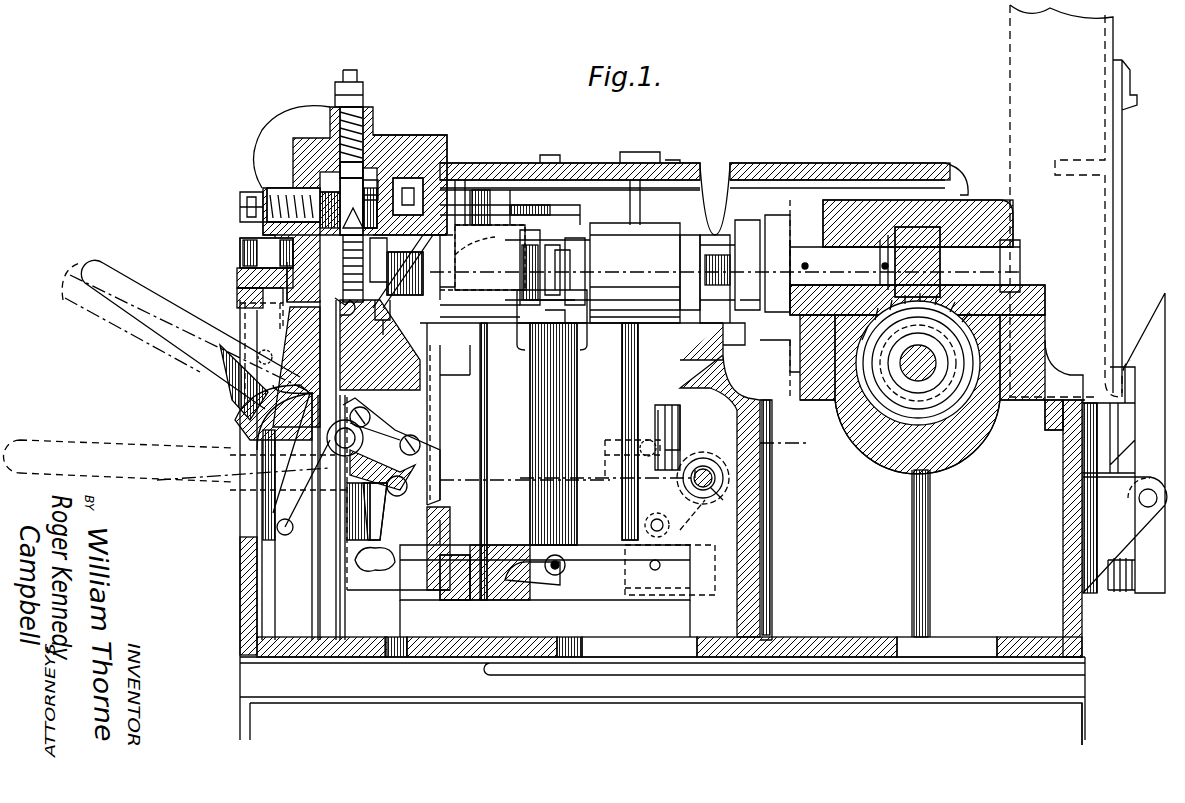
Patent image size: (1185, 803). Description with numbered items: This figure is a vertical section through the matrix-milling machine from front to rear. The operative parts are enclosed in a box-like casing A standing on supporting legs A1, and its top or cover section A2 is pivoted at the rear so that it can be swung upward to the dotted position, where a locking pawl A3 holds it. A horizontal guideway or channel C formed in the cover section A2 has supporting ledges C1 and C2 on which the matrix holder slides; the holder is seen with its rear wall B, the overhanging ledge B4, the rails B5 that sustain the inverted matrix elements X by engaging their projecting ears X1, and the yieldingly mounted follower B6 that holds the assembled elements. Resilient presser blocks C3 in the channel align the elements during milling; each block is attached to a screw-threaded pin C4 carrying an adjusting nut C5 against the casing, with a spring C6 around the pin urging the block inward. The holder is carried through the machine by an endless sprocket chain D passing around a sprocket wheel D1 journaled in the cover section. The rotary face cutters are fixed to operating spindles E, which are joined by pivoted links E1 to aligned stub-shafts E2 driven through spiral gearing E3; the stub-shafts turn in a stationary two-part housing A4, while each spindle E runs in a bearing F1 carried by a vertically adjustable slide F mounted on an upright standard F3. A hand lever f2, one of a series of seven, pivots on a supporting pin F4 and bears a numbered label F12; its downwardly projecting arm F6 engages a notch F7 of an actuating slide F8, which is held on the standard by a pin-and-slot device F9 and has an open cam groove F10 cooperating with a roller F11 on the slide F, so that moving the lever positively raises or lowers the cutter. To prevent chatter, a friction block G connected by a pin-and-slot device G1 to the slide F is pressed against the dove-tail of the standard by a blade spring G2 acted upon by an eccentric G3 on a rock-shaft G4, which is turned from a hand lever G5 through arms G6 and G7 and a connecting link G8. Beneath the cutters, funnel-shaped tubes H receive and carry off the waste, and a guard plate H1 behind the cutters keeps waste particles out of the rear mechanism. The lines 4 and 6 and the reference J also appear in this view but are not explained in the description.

The casing A is at (240, 548).
The supporting legs A1 is at (1072, 720).
The top or cover section A2 is at (675, 172).
The locking pawl A3 is at (1162, 390).
The two-part case or housing A4 is at (1012, 240).
The rear wall B is at (385, 262).
The supporting shelf or ledge B4 is at (440, 128).
The rails B5 is at (351, 206).
The follower B6 is at (385, 180).
The guideway or channel C is at (330, 150).
The supporting ledge C1 is at (420, 180).
The supporting ledge C2 is at (315, 268).
The resilient presser blocks C3 is at (334, 189).
The screw-threaded pin C4 is at (352, 80).
The adjusting nut C5 is at (362, 110).
The spring C6 is at (363, 118).
The endless sprocket chain D is at (406, 271).
The sprocket wheel D1 is at (515, 245).
The operating spindles E is at (562, 250).
The pivoted links E1 is at (760, 300).
The stub-shafts E2 is at (905, 266).
The spiral gearing E3 is at (912, 228).
The adjustable slides F is at (680, 418).
The bearings F1 is at (635, 273).
The upright posts or standards F3 is at (700, 320).
The supporting pins F4 is at (482, 271).
The downwardly projecting arms F6 is at (378, 511).
The notches F7 is at (368, 585).
The actuating slides F8 is at (495, 560).
The pin-and-slot devices F9 is at (655, 572).
The open cam grooves F10 is at (540, 580).
The pins or rollers F11 is at (566, 566).
The numbered plates or labels F12 is at (255, 352).
The hand lever f2 is at (137, 458).
The friction blocks G is at (683, 448).
The pin-and-slot devices G1 is at (650, 455).
The blade springs G2 is at (658, 515).
The cams or eccentrics G3 is at (706, 466).
The rock-shaft G4 is at (719, 502).
The hand lever G5 is at (110, 330).
The arm G6 is at (303, 540).
The arm G7 is at (695, 521).
The connecting link G8 is at (567, 488).
The funnel-shaped tubes or receptacles H is at (346, 470).
The guard plate H1 is at (392, 310).
The stop J is at (341, 301).
The matrix elements X is at (353, 255).
The projecting ears X1 is at (375, 200).
The section line 4 is at (790, 444).
The section line 6 is at (780, 293).